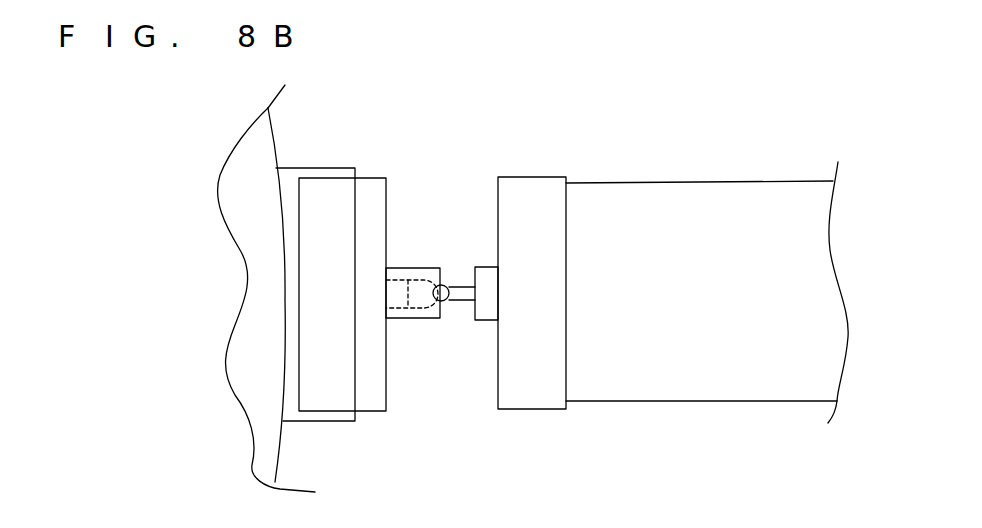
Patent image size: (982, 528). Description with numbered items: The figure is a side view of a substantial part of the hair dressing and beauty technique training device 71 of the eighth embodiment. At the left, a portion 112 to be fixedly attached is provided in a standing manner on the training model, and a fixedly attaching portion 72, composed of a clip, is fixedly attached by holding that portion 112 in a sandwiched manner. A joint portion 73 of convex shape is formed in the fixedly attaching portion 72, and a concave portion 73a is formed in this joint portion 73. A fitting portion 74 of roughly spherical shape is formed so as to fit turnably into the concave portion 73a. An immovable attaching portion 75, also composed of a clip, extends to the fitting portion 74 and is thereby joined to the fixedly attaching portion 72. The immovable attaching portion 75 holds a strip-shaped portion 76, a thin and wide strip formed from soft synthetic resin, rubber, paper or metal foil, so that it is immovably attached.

The hair dressing and beauty technique training device 71 is at (563, 133).
The fixedly attaching portion 72 is at (376, 412).
The joint portion 73 is at (412, 260).
The concave portion 73a is at (402, 303).
The fitting portion 74 is at (457, 260).
The immovable attaching portion 75 is at (533, 410).
The strip-shaped portion 76 is at (647, 403).
The portion to be fixedly attached 112 is at (328, 423).